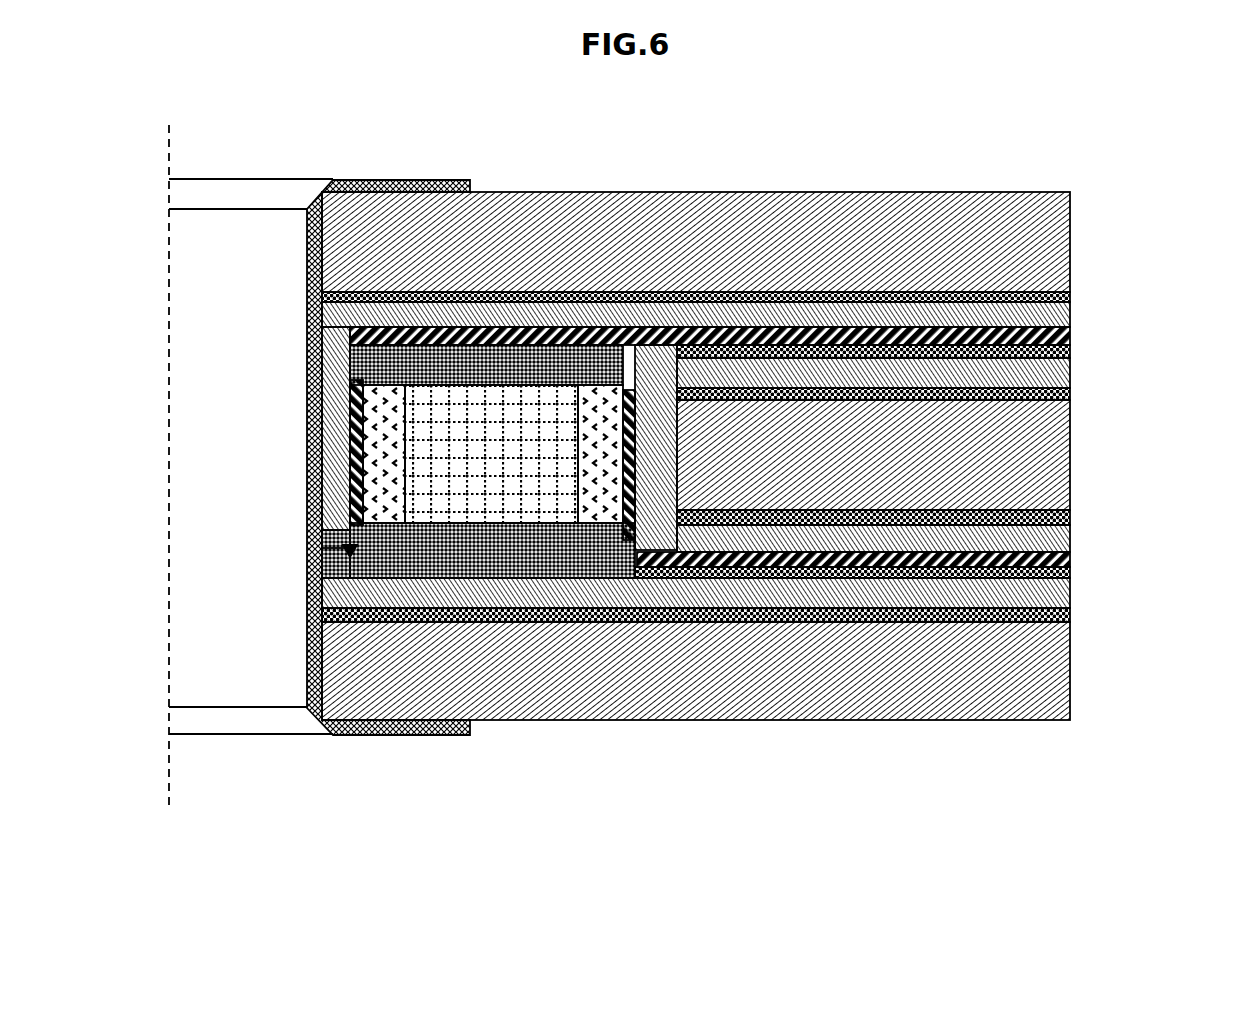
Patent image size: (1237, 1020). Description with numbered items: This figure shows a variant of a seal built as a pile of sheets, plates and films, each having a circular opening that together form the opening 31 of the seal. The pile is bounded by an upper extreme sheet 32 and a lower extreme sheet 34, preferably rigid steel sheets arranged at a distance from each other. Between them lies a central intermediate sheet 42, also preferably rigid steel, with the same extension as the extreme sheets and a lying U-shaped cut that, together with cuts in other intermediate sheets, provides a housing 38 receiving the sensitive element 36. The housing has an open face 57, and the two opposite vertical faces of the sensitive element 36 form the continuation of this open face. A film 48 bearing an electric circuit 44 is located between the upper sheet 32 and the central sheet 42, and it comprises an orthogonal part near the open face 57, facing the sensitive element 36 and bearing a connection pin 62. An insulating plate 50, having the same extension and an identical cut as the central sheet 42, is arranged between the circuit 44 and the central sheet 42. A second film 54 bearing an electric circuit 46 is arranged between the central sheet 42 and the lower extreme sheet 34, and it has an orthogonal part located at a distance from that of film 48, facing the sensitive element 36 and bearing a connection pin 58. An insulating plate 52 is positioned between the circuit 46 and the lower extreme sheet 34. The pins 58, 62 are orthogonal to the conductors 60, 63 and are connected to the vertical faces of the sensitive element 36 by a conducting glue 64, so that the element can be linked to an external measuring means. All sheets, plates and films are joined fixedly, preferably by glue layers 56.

The opening 31 is at (221, 363).
The upper extreme sheet 32 is at (1030, 191).
The lower extreme sheet 34 is at (1038, 672).
The sensitive element 36 is at (497, 470).
The housing 38 is at (307, 567).
The central intermediate sheet 42 is at (1040, 461).
The electric circuit 44 is at (1070, 333).
The electric circuit 46 is at (912, 567).
The film 48 is at (1070, 305).
The insulating plate 50 is at (1070, 370).
The insulating plate 52 is at (1070, 588).
The film 54 is at (1070, 533).
The glue layers 56 is at (1070, 573).
The open face 57 is at (308, 463).
The pin 58 is at (612, 487).
The conductor 60 is at (770, 567).
The pin 62 is at (365, 478).
The conductor 63 is at (455, 348).
The conducting glue 64 is at (362, 345).